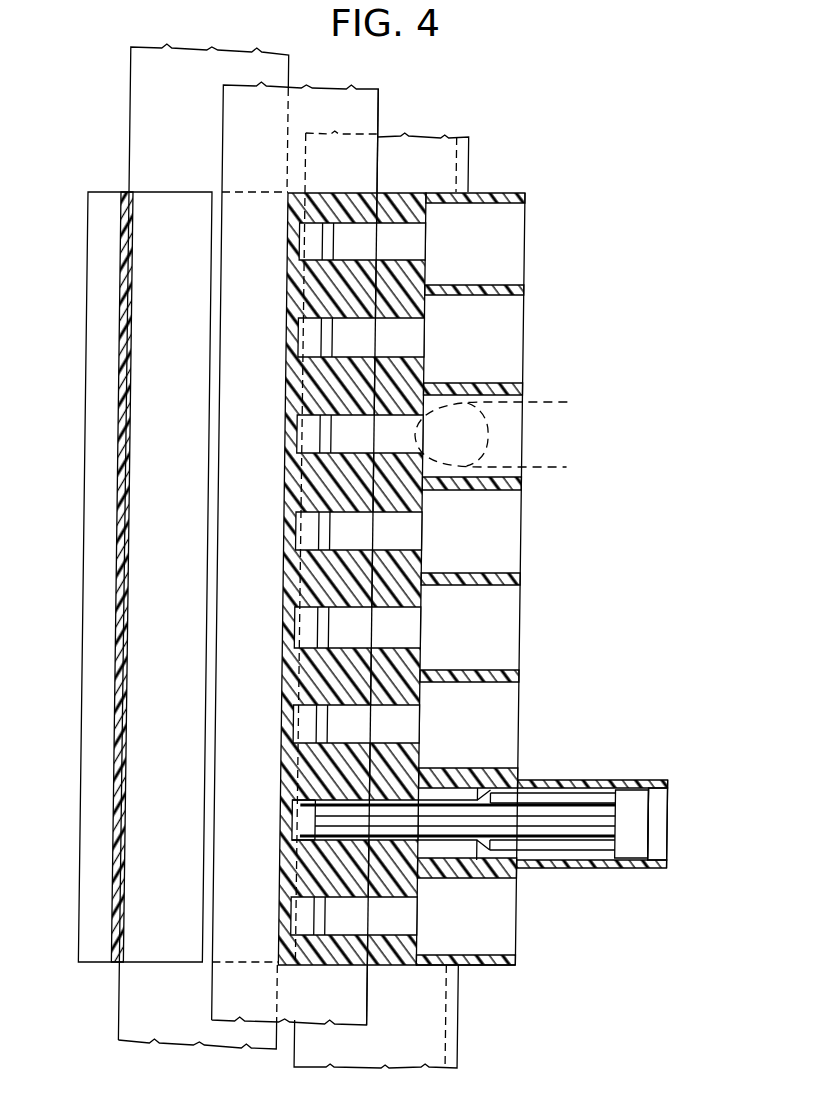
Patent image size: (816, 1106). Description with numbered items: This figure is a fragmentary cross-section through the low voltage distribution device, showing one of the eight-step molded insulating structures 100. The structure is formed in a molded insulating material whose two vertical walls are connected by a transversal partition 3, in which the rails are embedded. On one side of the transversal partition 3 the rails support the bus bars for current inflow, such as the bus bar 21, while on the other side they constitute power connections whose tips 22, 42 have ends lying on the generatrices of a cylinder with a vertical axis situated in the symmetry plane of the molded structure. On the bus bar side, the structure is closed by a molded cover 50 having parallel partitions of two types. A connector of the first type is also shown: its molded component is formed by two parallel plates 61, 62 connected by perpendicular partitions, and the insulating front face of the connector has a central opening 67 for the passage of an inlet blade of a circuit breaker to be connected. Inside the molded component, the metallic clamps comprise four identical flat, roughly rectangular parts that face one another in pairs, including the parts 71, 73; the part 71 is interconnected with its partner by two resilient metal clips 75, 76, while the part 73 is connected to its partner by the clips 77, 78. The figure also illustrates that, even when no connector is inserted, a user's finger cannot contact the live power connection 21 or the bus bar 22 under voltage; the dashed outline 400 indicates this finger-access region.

The transversal partition 3 is at (530, 385).
The bus bar 21 is at (163, 98).
The tip of power connection 22 is at (347, 111).
The tip of power connection 42 is at (447, 157).
The molded cover 50 is at (86, 806).
The parallel plate 61 is at (632, 782).
The parallel plate 62 is at (641, 870).
The central opening 67 is at (676, 822).
The flat rectangular part 71 is at (548, 806).
The flat rectangular part 73 is at (578, 843).
The resilient metal clip 75 is at (453, 795).
The resilient metal clip 76 is at (571, 795).
The resilient metal clip 77 is at (446, 850).
The resilient metal clip 78 is at (542, 842).
The eight-step structure 100 is at (540, 258).
The radiation pattern region 400 is at (550, 401).